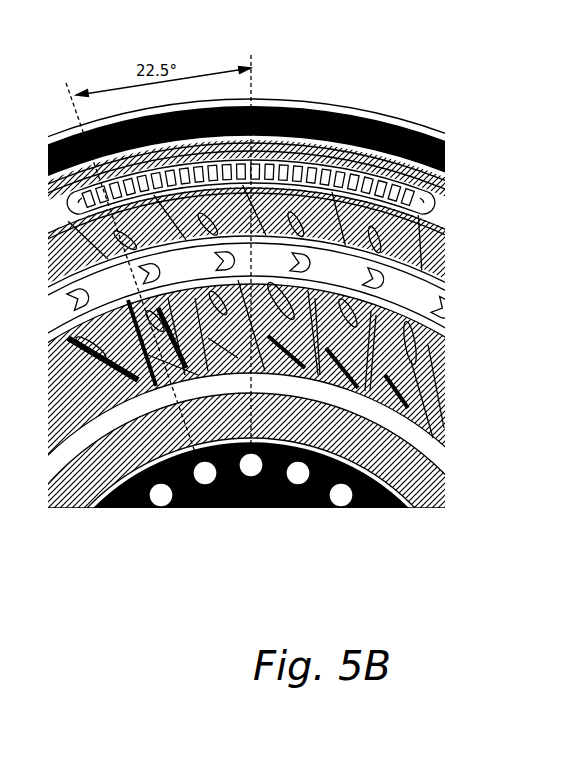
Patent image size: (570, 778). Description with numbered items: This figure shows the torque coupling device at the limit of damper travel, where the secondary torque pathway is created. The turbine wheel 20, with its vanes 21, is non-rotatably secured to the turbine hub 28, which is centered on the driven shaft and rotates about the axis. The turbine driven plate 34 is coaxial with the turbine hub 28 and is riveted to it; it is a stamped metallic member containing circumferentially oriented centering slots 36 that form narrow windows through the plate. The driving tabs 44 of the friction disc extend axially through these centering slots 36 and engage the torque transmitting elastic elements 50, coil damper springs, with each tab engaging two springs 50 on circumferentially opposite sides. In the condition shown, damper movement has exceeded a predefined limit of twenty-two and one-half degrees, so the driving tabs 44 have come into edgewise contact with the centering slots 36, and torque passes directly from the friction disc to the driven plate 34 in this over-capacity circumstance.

The turbine wheel 20 is at (424, 263).
The vanes 21 is at (340, 347).
The turbine hub 28 is at (361, 500).
The turbine driven plate 34 is at (372, 150).
The centering slots 36 is at (420, 192).
The driving tabs 44 is at (420, 170).
The torque transmitting elastic elements 50 is at (275, 160).